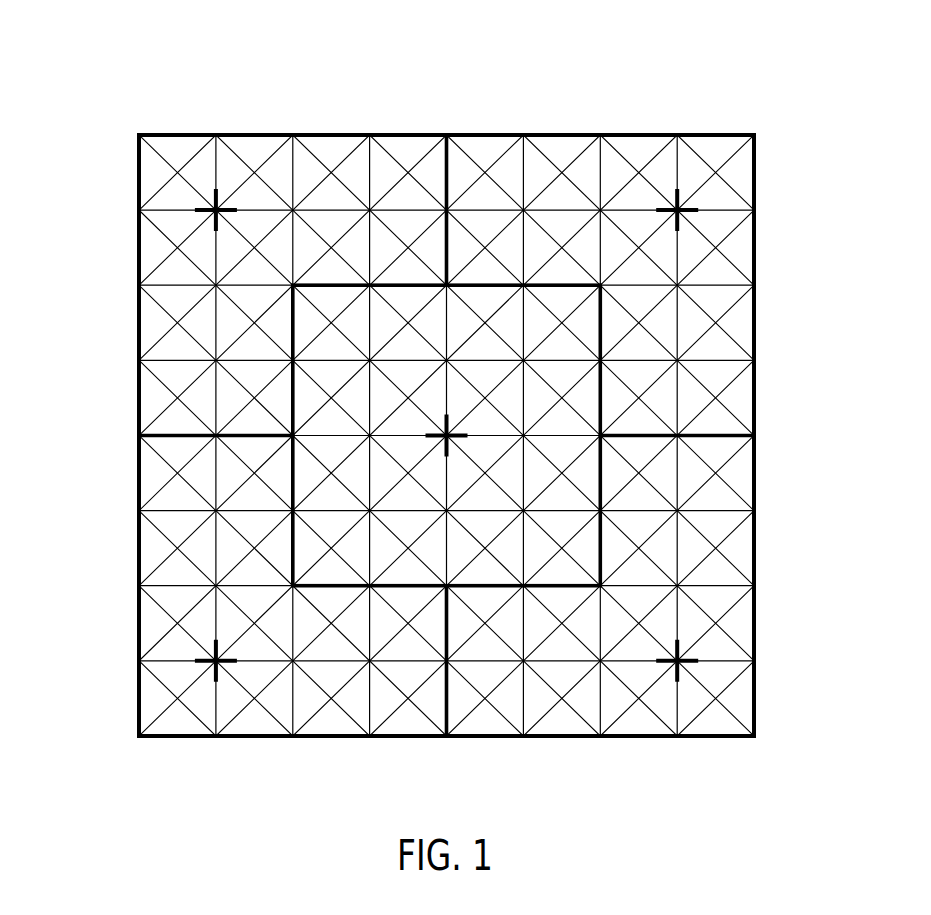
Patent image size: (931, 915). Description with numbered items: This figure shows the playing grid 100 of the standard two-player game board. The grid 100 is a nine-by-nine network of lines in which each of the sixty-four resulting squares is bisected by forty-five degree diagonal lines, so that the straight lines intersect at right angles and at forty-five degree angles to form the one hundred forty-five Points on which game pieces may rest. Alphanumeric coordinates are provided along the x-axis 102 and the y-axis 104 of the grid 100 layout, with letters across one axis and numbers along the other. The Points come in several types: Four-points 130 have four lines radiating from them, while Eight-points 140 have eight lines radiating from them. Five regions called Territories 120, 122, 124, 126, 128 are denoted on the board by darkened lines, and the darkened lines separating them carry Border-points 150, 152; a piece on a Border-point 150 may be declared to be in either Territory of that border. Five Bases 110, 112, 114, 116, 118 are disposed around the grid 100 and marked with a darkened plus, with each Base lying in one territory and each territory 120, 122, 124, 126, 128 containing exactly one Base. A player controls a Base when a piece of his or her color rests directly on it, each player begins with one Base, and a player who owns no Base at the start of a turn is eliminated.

The grid 100 is at (541, 62).
The x-axis 102 is at (110, 127).
The y-axis 104 is at (764, 764).
The Base 110 is at (219, 203).
The Base 112 is at (684, 207).
The Base 114 is at (681, 659).
The Base 116 is at (215, 659).
The Base 118 is at (449, 430).
The territory 120 is at (244, 275).
The territory 122 is at (666, 275).
The territory 124 is at (660, 624).
The territory 126 is at (245, 567).
The territory 128 is at (480, 505).
The Four-point 130 is at (336, 245).
The Eight-point 140 is at (215, 359).
The Border-point 150 is at (523, 284).
The Border-point 152 is at (602, 434).